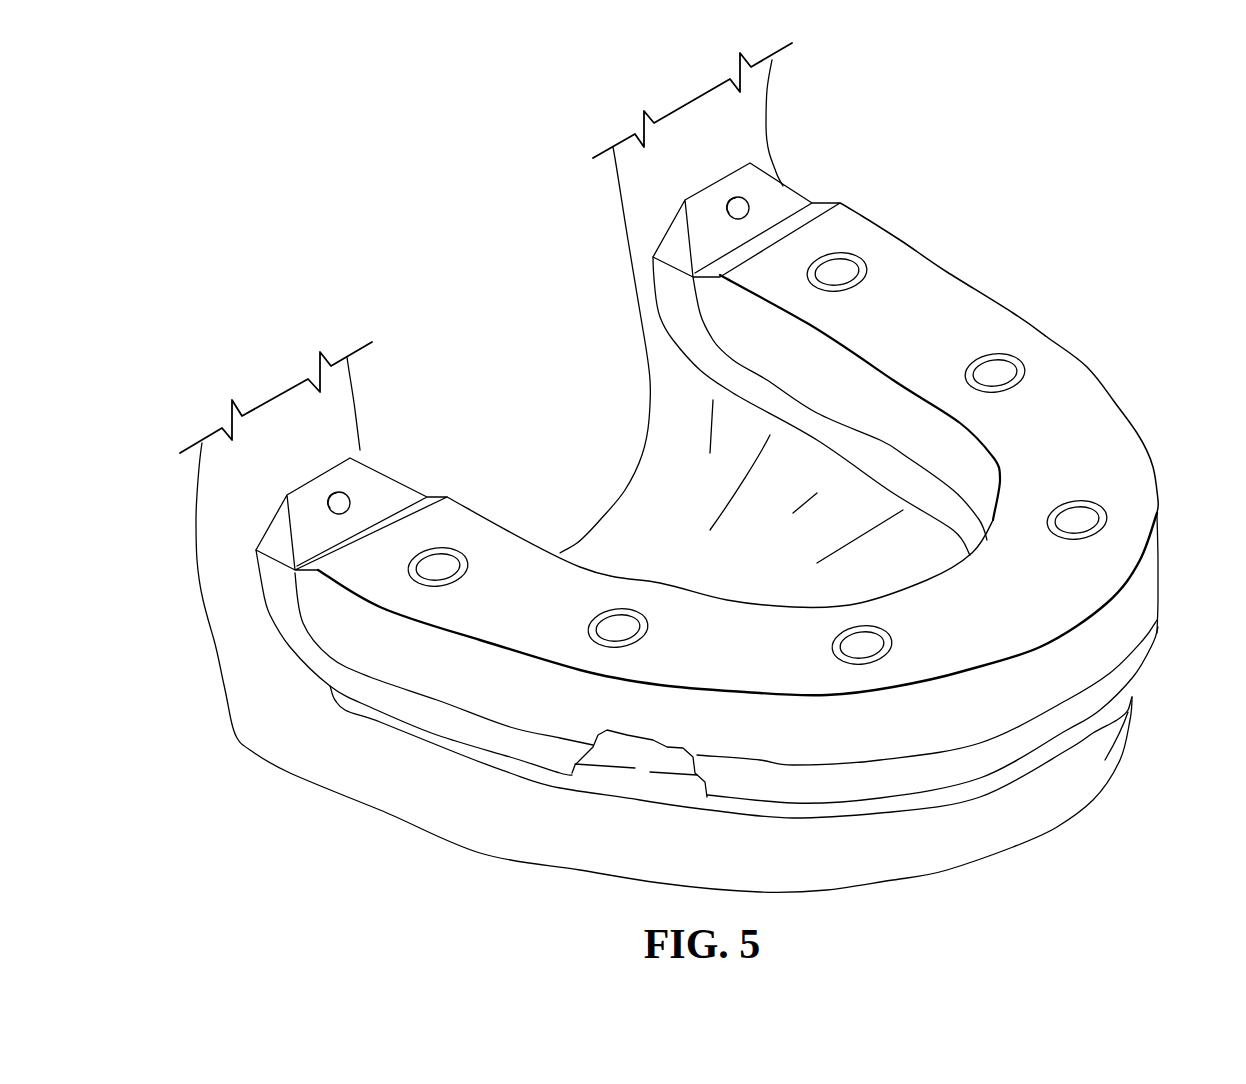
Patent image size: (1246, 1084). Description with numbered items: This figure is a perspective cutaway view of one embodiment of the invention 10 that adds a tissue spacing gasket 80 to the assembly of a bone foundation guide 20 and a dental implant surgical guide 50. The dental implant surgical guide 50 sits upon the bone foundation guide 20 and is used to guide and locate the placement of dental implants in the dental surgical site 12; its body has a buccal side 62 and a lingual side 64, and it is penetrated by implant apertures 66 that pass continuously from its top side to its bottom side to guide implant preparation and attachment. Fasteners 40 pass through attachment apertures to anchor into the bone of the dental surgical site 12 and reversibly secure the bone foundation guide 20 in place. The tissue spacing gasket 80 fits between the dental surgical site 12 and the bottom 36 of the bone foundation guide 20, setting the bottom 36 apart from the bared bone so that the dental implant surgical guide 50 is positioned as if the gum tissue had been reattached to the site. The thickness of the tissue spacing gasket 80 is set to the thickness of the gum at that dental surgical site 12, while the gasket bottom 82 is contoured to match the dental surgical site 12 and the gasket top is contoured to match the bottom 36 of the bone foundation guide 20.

The invention 10 is at (1090, 220).
The dental surgical site 12 is at (888, 825).
The bone foundation guide 20 is at (1105, 717).
The bottom 36 is at (1003, 778).
The fastener 40 is at (340, 505).
The dental implant surgical guide 50 is at (1092, 372).
The buccal side 62 is at (772, 753).
The lingual side 64 is at (740, 332).
The implant aperture 66 is at (840, 262).
The tissue spacing gasket 80 is at (800, 430).
The gasket bottom 82 is at (452, 757).